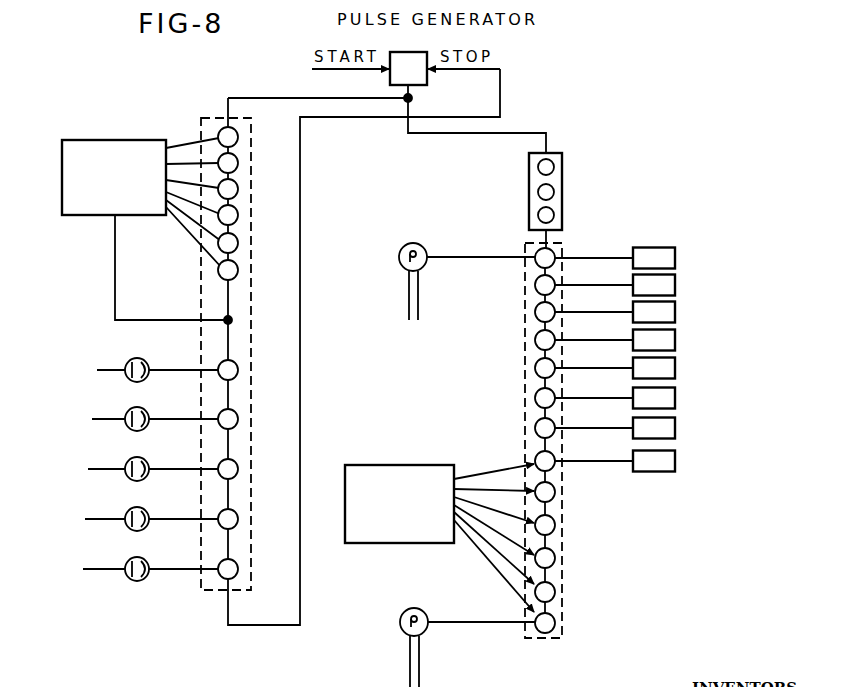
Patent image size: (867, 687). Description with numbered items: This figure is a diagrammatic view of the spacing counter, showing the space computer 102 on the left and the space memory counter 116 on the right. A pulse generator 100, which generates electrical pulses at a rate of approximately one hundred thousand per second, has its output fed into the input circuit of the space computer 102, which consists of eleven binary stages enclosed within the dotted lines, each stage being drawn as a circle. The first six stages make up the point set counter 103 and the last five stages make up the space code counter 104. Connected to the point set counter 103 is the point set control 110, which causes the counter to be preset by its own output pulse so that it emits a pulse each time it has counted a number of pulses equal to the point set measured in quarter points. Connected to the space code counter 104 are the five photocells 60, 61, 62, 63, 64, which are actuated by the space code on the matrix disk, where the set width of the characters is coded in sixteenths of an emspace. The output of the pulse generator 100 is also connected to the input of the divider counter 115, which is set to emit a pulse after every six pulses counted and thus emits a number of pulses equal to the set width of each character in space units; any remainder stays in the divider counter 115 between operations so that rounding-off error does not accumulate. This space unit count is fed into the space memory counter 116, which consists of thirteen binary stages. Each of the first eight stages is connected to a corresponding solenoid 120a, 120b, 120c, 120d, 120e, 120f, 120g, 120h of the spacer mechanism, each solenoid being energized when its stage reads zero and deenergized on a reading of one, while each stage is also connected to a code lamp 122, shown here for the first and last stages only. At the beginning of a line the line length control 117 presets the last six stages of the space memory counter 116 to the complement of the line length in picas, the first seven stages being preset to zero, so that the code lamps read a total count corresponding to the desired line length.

The pulse generator 100 is at (419, 77).
The space computer 102 is at (212, 117).
The point set counter 103 is at (241, 187).
The space code counter 104 is at (241, 410).
The point set control 110 is at (72, 143).
The divider counter 115 is at (558, 163).
The space memory counter 116 is at (567, 240).
The line length control 117 is at (384, 468).
The solenoid 120a is at (669, 264).
The solenoid 120b is at (670, 290).
The solenoid 120c is at (669, 313).
The solenoid 120d is at (672, 340).
The solenoid 120e is at (672, 367).
The solenoid 120f is at (672, 400).
The solenoid 120g is at (672, 427).
The solenoid 120h is at (672, 462).
The code lamp 122 is at (406, 247).
The photocell 60 is at (127, 360).
The photocell 61 is at (127, 410).
The photocell 62 is at (128, 460).
The photocell 63 is at (127, 511).
The photocell 64 is at (149, 556).